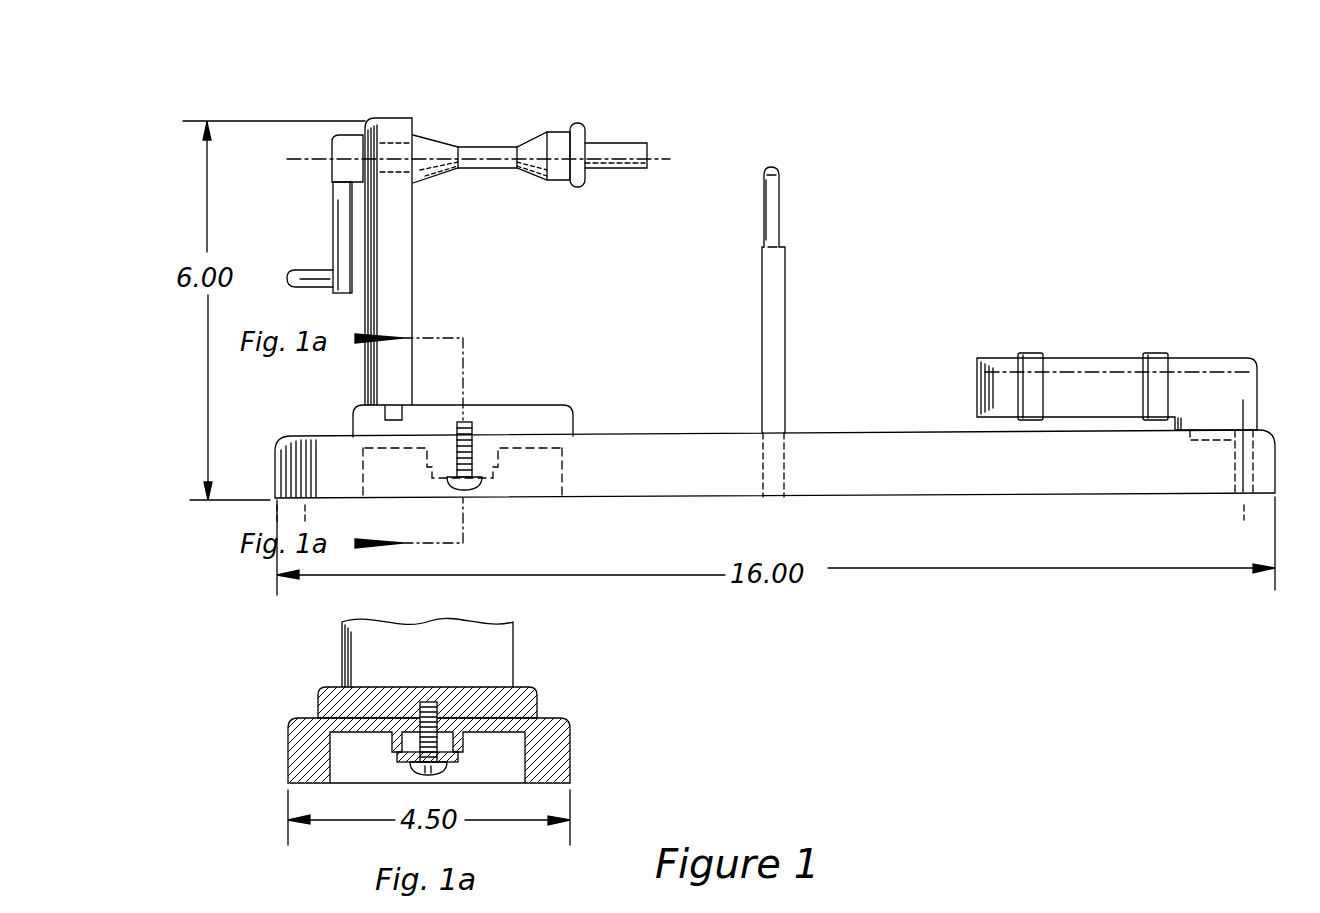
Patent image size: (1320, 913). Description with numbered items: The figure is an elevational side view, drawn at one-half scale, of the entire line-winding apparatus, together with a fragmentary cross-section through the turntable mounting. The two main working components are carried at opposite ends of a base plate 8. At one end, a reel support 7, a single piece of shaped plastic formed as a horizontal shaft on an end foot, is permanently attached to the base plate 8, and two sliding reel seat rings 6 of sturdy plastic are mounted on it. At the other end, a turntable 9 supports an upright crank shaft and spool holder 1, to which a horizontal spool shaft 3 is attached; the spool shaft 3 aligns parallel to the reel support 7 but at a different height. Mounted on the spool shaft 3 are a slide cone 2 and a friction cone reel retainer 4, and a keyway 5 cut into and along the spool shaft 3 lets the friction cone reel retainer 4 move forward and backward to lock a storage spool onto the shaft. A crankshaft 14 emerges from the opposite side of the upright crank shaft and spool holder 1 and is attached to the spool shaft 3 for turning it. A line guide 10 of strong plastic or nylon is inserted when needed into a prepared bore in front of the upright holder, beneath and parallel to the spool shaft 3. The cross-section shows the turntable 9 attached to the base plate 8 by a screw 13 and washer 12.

In FIG. 1, the upright crank shaft and spool holder 1 is at (415, 247).
In FIG. 1A, the upright crank shaft and spool holder 1 is at (513, 655).
In FIG. 1, the slide cone 2 is at (437, 138).
In FIG. 1, the spool shaft 3 is at (638, 143).
In FIG. 1, the friction cone reel retainer 4 is at (580, 125).
In FIG. 1, the keyway 5 is at (643, 170).
In FIG. 1, the sliding reel seat rings 6 is at (1158, 355).
In FIG. 1, the reel support 7 is at (1222, 358).
In FIG. 1, the base plate 8 is at (875, 432).
In FIG. 1A, the base plate 8 is at (572, 750).
In FIG. 1, the turntable 9 is at (523, 403).
In FIG. 1A, the turntable 9 is at (538, 690).
In FIG. 1, the line guide 10 is at (785, 327).
In FIG. 1A, the washer 12 is at (400, 757).
In FIG. 1, the screw 13 is at (462, 460).
In FIG. 1A, the screw 13 is at (420, 705).
In FIG. 1, the crankshaft 14 is at (333, 230).